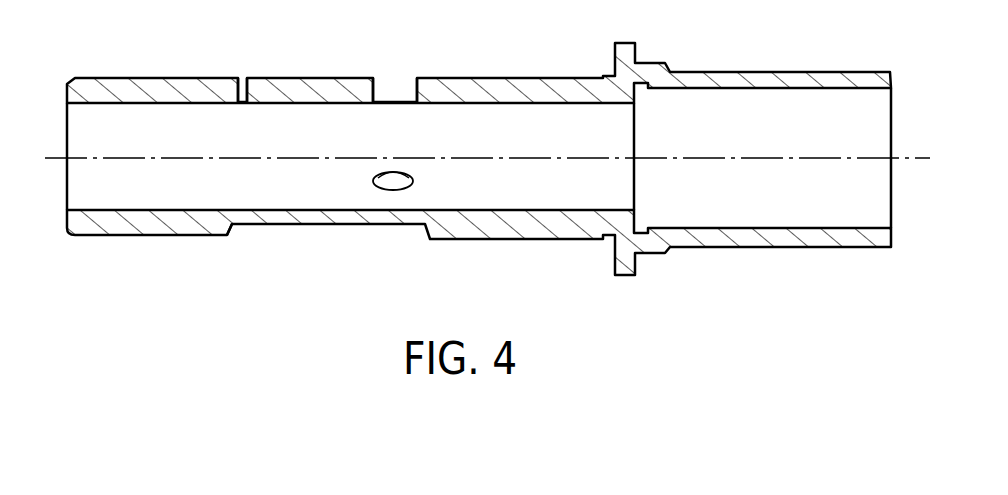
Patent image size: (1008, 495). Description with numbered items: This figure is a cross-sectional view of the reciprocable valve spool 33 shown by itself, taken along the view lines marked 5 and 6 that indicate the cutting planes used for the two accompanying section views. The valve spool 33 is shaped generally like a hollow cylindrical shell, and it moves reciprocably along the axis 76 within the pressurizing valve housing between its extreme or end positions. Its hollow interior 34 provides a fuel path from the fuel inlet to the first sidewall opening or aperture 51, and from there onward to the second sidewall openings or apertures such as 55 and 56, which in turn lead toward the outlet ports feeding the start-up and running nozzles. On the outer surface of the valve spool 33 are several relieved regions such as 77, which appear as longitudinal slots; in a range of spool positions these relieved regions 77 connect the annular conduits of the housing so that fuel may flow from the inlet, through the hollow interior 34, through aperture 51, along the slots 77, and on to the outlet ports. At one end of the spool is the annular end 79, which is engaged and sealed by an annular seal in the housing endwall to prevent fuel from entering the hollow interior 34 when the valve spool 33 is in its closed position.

The reciprocable valve spool 33 is at (510, 240).
The hollow interior 34 is at (513, 142).
The first sidewall opening or aperture 51 is at (246, 88).
The second sidewall opening or aperture 55 is at (407, 83).
The second sidewall opening or aperture 56 is at (412, 184).
The axis 76 is at (847, 160).
The relieved region or longitudinal slot 77 is at (245, 226).
The annular end 79 is at (62, 217).
The section line 5- 5 is at (394, 83).
The section line 6- 6 is at (241, 103).